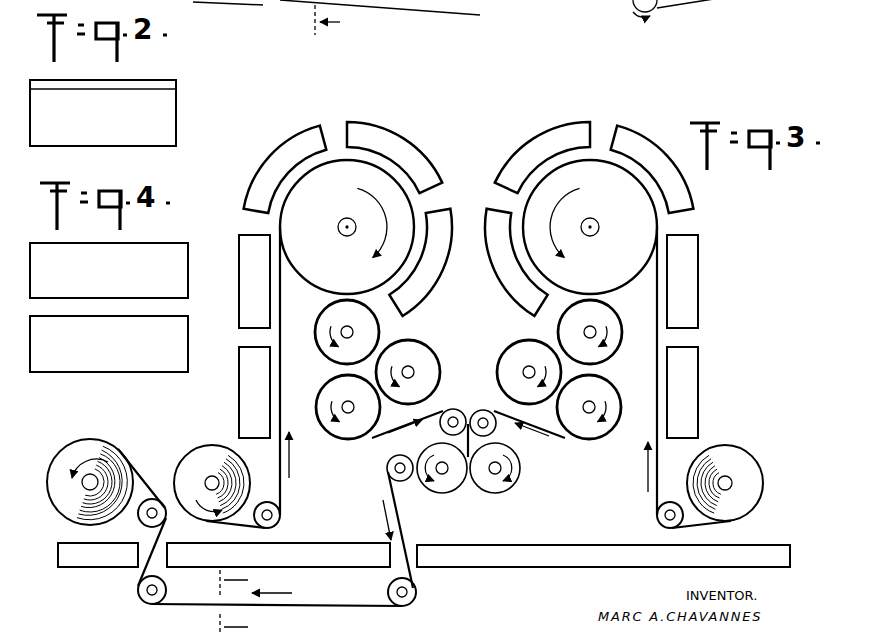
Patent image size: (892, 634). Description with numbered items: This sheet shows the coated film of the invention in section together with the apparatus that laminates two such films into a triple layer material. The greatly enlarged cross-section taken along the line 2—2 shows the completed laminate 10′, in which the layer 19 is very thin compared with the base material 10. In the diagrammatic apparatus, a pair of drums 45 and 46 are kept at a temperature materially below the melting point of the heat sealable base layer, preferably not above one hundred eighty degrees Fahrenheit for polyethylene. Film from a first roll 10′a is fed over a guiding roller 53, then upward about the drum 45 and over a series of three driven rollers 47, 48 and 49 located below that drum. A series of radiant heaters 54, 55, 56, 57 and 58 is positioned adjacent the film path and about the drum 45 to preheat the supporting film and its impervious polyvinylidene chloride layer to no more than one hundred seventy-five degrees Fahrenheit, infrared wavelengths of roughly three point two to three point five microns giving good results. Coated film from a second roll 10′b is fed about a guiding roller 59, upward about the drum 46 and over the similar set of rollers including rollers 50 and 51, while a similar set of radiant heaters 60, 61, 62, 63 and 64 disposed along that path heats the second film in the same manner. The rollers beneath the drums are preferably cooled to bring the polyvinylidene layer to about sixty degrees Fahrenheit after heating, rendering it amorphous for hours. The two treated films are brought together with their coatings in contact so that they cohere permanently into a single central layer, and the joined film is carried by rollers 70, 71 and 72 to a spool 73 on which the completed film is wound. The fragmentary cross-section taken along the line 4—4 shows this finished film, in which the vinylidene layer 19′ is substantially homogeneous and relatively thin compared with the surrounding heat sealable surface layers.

In FIG. 2, the base material 10 is at (155, 127).
In FIG. 2, the completed laminate 10′ is at (181, 92).
In FIG. 2, the layer 19 is at (88, 80).
In FIG. 4, the first roll 10′a is at (159, 251).
In FIG. 3, the first roll 10′a is at (205, 450).
In FIG. 4, the second roll 10′b is at (141, 360).
In FIG. 3, the second roll 10′b is at (742, 452).
In FIG. 4, the vinylidene layer 19′ is at (181, 307).
In FIG. 3, the line 2— 2 is at (314, 21).
In FIG. 3, the line 4— 4 is at (242, 602).
In FIG. 3, the drum 45 is at (350, 267).
In FIG. 3, the drum 46 is at (598, 211).
In FIG. 3, the driven roller 47 is at (322, 313).
In FIG. 3, the driven roller 48 is at (432, 356).
In FIG. 3, the driven roller 49 is at (341, 426).
In FIG. 3, the roller 50 is at (612, 325).
In FIG. 3, the roller 51 is at (500, 368).
In FIG. 3, the guiding roller 53 is at (266, 501).
In FIG. 3, the radiant heater 54 is at (239, 399).
In FIG. 3, the radiant heater 55 is at (238, 240).
In FIG. 3, the radiant heater 56 is at (274, 126).
In FIG. 3, the radiant heater 57 is at (392, 133).
In FIG. 3, the radiant heater 58 is at (434, 290).
In FIG. 3, the guiding roller 59 is at (676, 501).
In FIG. 3, the radiant heater 60 is at (690, 383).
In FIG. 3, the radiant heater 61 is at (699, 283).
In FIG. 3, the radiant heater 62 is at (634, 133).
In FIG. 3, the radiant heater 63 is at (530, 140).
In FIG. 3, the radiant heater 64 is at (503, 290).
In FIG. 3, the roller 70 is at (390, 589).
In FIG. 3, the roller 71 is at (165, 587).
In FIG. 3, the roller 72 is at (145, 526).
In FIG. 3, the spool 73 is at (93, 447).